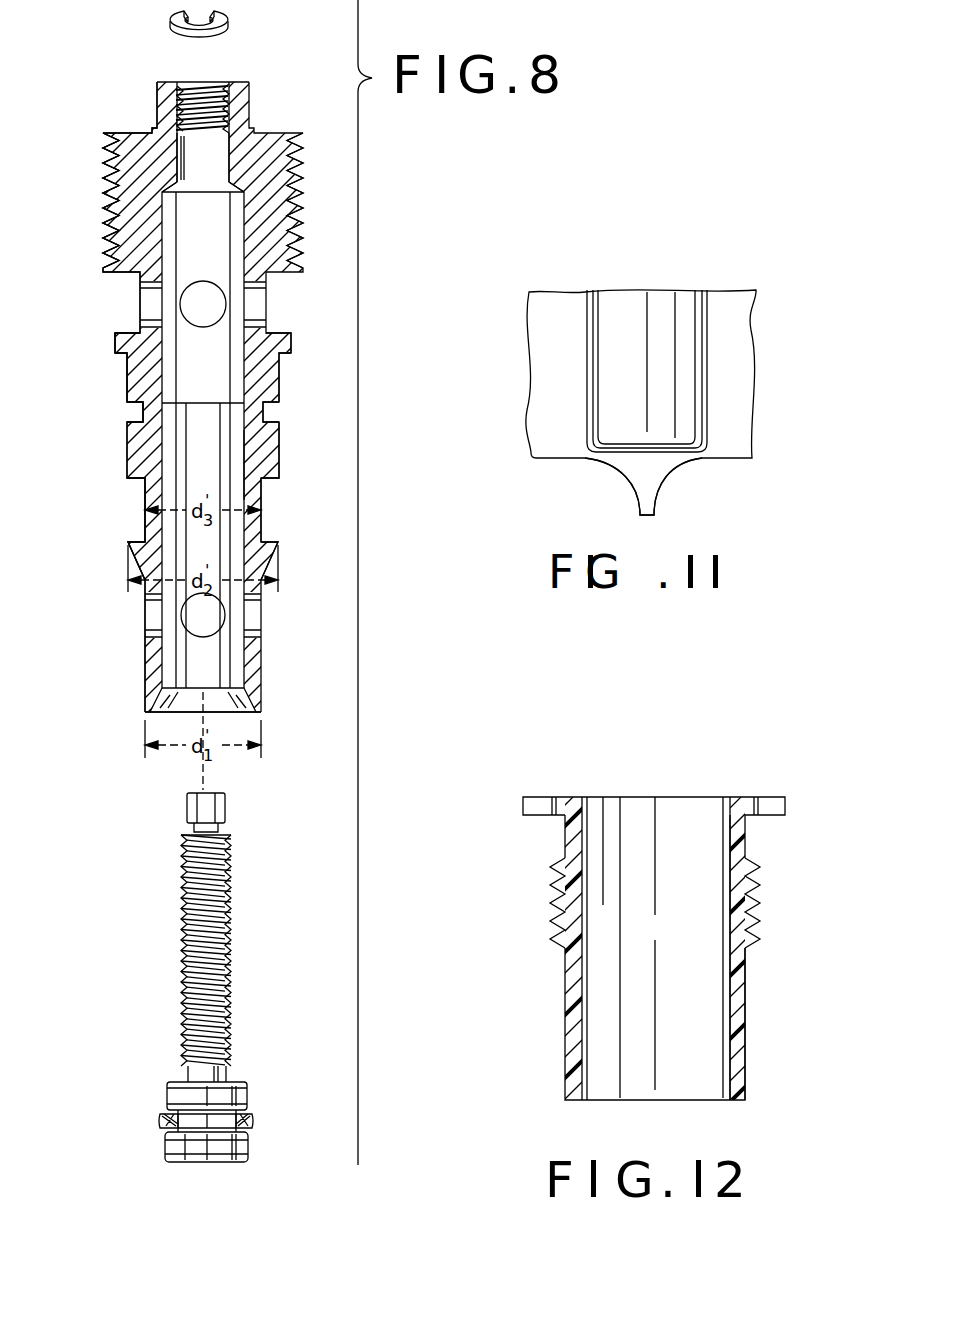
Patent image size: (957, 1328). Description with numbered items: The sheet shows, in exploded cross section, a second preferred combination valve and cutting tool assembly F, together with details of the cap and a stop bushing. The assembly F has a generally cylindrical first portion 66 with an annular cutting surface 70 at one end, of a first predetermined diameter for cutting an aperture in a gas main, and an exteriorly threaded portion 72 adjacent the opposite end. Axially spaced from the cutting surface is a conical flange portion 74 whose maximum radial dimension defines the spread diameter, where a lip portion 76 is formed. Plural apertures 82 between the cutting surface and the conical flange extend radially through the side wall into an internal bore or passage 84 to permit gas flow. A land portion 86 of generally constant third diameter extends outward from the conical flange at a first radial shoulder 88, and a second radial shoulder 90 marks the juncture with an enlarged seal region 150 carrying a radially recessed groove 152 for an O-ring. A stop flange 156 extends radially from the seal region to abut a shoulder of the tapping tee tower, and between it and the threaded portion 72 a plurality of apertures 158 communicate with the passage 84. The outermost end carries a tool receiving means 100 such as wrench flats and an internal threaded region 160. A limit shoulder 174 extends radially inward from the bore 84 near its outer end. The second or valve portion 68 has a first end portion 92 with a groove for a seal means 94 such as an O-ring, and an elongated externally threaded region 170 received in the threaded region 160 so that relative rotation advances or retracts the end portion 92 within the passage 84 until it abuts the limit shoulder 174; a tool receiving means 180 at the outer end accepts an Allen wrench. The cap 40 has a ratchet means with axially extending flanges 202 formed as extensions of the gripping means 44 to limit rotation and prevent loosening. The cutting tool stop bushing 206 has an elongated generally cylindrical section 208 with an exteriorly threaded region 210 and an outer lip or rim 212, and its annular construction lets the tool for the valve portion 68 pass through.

In FIG. 8, the first portion 66 is at (322, 267).
In FIG. 8, the tool receiving means 100 is at (157, 95).
In FIG. 8, the internal threaded region 160 is at (207, 94).
In FIG. 8, the exteriorly threaded portion 72 is at (110, 212).
In FIG. 8, the limit shoulder 174 is at (215, 194).
In FIG. 8, the apertures 158 is at (248, 326).
In FIG. 8, the stop flange 156 is at (116, 343).
In FIG. 8, the seal region 150 is at (130, 379).
In FIG. 8, the groove 152 is at (128, 424).
In FIG. 8, the first radial shoulder 88 is at (136, 541).
In FIG. 8, the lip portion 76 is at (130, 547).
In FIG. 8, the internal bore or passage 84 is at (243, 468).
In FIG. 8, the second radial shoulder 90 is at (272, 480).
In FIG. 8, the land portion 86 is at (265, 520).
In FIG. 8, the conical flange portion 74 is at (272, 565).
In FIG. 8, the apertures 82 is at (262, 628).
In FIG. 8, the annular cutting surface 70 is at (262, 690).
In FIG. 8, the combination valve and cutting tool assembly F is at (302, 660).
In FIG. 8, the second or valve portion 68 is at (301, 962).
In FIG. 8, the tool receiving means 180 is at (216, 797).
In FIG. 8, the elongated externally threaded region 170 is at (228, 871).
In FIG. 8, the seal means 94 is at (250, 1120).
In FIG. 8, the first end portion 92 is at (250, 1148).
In FIG. 11, the cap 40 is at (724, 361).
In FIG. 11, the gripping means 44 is at (633, 312).
In FIG. 11, the flanges 202 is at (645, 490).
In FIG. 12, the cutting tool stop bushing 206 is at (770, 919).
In FIG. 12, the lip or rim 212 is at (770, 803).
In FIG. 12, the exteriorly threaded region 210 is at (556, 911).
In FIG. 12, the elongated generally cylindrical section 208 is at (738, 1020).